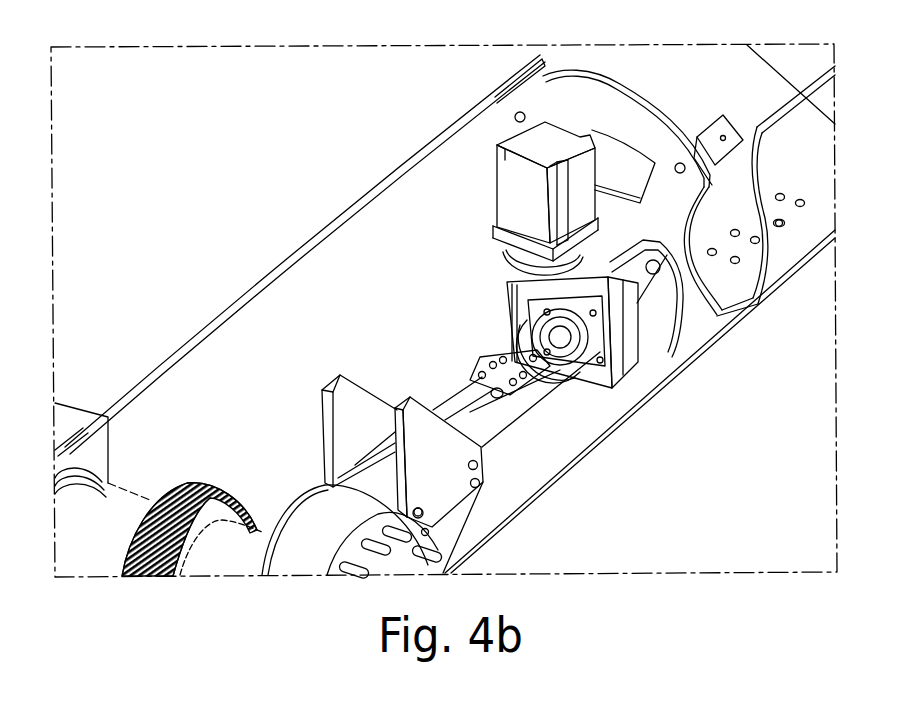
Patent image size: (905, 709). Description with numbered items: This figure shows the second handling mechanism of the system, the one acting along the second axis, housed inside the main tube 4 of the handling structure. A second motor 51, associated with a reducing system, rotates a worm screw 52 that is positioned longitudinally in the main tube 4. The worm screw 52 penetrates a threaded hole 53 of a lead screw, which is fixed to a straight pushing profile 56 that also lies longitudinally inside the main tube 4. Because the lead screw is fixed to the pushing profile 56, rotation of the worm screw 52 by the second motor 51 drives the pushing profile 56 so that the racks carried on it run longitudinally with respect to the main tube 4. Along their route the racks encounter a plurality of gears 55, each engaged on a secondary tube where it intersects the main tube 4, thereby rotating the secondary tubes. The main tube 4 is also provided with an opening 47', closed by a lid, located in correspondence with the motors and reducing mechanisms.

The main tube 4 is at (273, 277).
The opening 47' is at (660, 233).
The second motor 51 is at (528, 150).
The worm screw 52 is at (470, 415).
The threaded hole 53 is at (497, 393).
The gear 55 is at (213, 490).
The pushing profile 56 is at (493, 443).